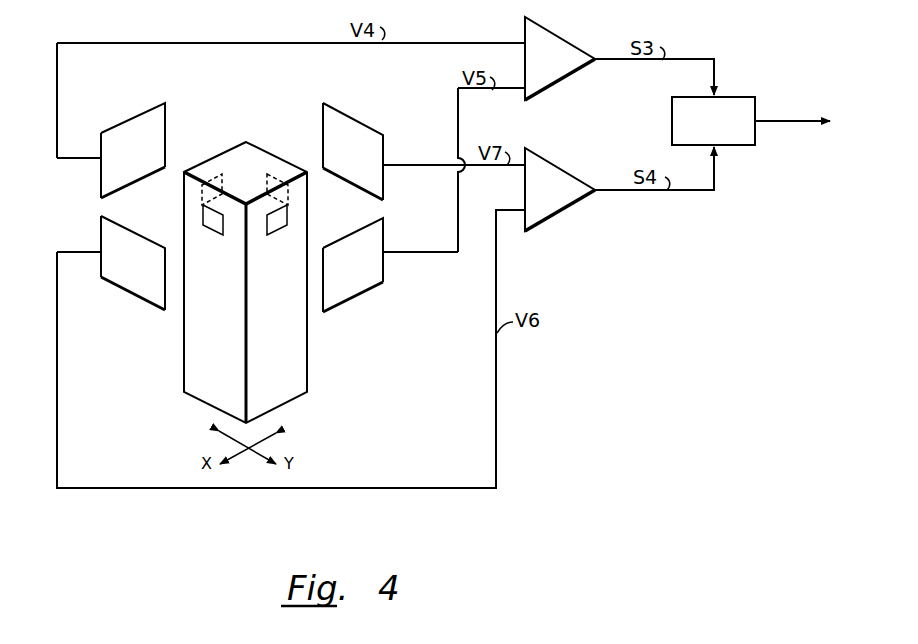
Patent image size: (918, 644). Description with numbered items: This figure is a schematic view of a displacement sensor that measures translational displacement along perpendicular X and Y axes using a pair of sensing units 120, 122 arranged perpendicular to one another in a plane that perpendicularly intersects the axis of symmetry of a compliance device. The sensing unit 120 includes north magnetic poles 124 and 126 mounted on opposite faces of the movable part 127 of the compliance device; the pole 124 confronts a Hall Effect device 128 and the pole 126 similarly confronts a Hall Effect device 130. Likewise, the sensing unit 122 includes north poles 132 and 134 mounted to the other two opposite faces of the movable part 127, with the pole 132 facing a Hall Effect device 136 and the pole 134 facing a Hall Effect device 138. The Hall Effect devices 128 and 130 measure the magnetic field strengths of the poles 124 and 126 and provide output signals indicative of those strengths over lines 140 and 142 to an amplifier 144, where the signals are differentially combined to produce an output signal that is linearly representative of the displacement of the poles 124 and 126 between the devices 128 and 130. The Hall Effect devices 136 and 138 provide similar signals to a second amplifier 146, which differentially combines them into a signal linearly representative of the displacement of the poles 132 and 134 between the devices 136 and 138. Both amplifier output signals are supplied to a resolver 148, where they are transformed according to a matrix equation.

The sensing unit 120 is at (377, 300).
The sensing unit 122 is at (125, 305).
The north magnetic pole 124 is at (287, 215).
The north magnetic pole 126 is at (222, 174).
The movable part 127 is at (200, 400).
The Hall Effect device 128 is at (383, 230).
The Hall Effect device 130 is at (128, 120).
The north pole 132 is at (203, 212).
The north pole 134 is at (267, 174).
The Hall Effect device 136 is at (101, 233).
The Hall Effect device 138 is at (368, 125).
The line 140 is at (459, 128).
The line 142 is at (485, 40).
The amplifier 144 is at (555, 30).
The second amplifier 146 is at (558, 167).
The resolver 148 is at (737, 97).